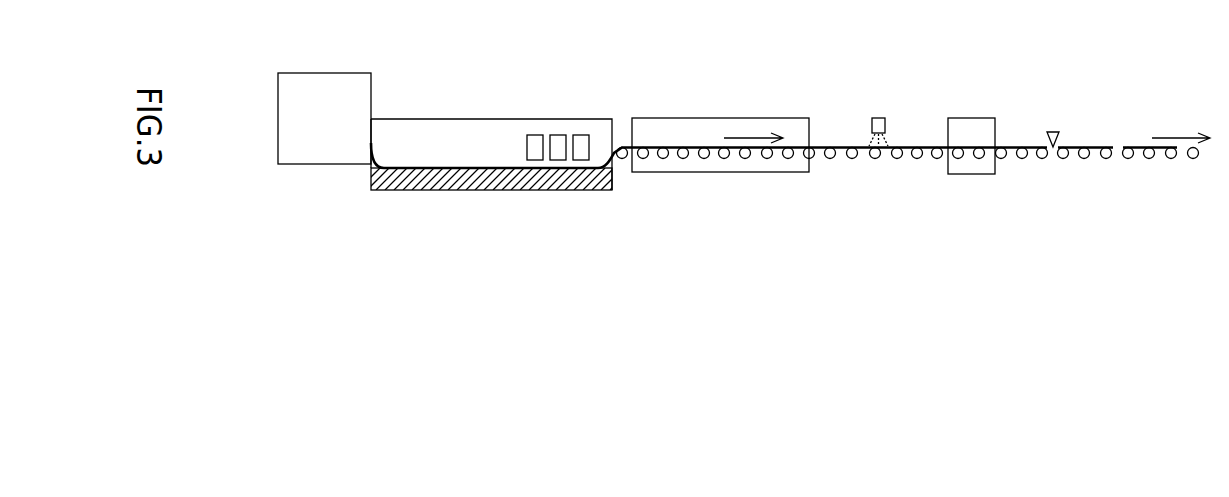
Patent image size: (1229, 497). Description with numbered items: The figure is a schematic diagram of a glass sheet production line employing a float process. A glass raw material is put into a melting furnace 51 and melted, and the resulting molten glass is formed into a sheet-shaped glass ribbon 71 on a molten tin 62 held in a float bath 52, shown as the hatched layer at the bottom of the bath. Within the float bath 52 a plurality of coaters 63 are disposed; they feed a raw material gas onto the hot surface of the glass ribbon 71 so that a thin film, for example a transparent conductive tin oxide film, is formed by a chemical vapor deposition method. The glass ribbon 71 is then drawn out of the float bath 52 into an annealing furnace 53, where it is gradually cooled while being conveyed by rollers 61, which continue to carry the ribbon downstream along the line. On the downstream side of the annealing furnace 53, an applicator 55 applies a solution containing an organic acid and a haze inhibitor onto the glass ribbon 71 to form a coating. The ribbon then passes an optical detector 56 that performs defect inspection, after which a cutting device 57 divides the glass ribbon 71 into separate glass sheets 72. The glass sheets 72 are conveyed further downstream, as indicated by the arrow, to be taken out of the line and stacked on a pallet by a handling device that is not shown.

The melting furnace 51 is at (328, 93).
The float bath 52 is at (481, 118).
The molten tin 62 is at (488, 188).
The coaters 63 is at (582, 147).
The glass ribbon 71 is at (650, 146).
The annealing furnace 53 is at (733, 117).
The rollers 61 is at (830, 161).
The applicator 55 is at (877, 117).
The optical detector 56 is at (967, 117).
The cutting device 57 is at (1053, 131).
The glass sheets 72 is at (1138, 147).